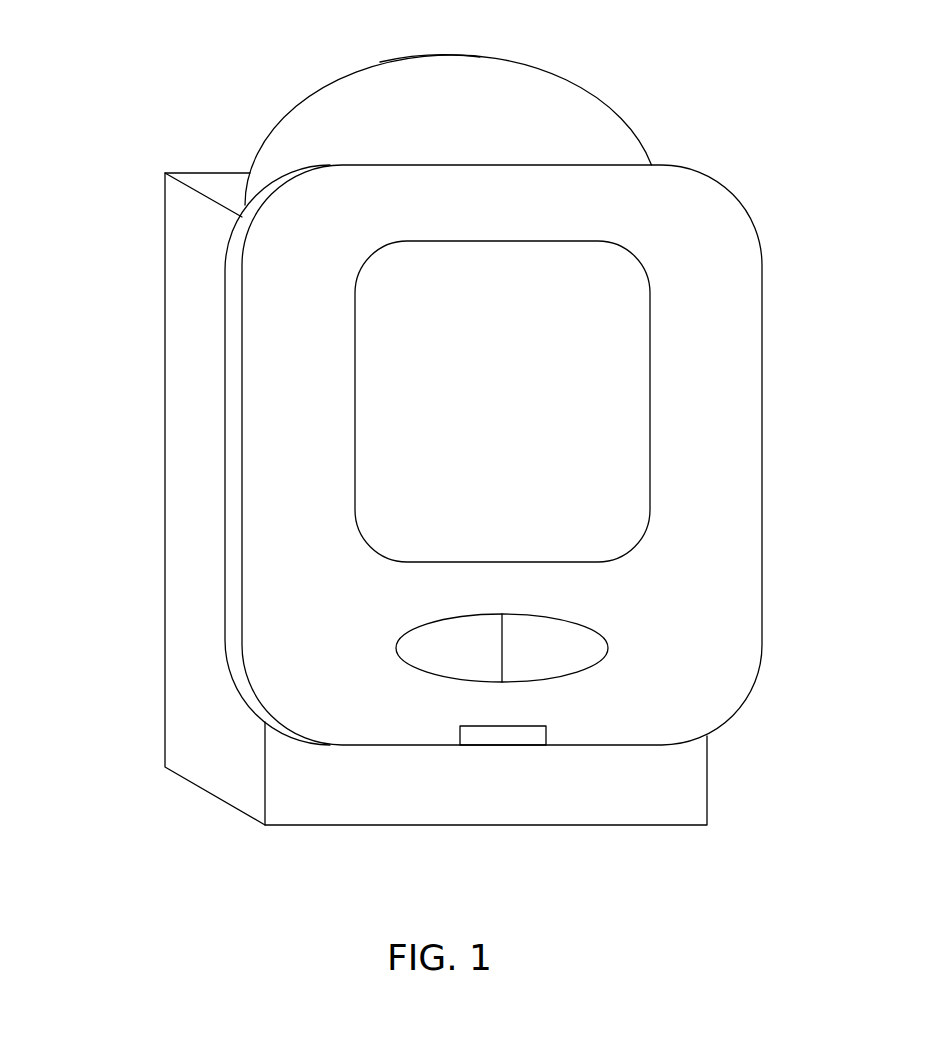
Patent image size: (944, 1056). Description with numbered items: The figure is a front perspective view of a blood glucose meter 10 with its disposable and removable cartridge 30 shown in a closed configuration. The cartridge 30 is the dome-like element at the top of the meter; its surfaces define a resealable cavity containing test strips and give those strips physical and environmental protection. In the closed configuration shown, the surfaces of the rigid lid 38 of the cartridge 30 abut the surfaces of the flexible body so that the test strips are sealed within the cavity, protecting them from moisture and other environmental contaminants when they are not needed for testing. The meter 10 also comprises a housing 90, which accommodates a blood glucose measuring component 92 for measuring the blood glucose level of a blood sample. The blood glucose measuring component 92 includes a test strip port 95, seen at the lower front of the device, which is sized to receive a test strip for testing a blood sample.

The blood glucose meter 10 is at (533, 500).
The disposable and removable cartridge 30 is at (633, 65).
The rigid lid 38 is at (418, 65).
The housing 90 is at (147, 565).
The blood glucose measuring component 92 is at (752, 620).
The test strip port 95 is at (510, 740).